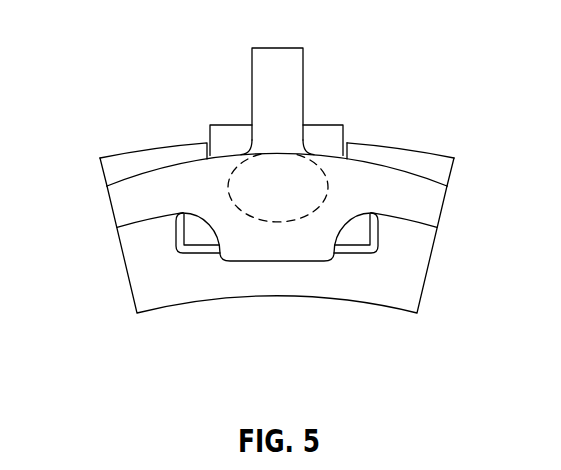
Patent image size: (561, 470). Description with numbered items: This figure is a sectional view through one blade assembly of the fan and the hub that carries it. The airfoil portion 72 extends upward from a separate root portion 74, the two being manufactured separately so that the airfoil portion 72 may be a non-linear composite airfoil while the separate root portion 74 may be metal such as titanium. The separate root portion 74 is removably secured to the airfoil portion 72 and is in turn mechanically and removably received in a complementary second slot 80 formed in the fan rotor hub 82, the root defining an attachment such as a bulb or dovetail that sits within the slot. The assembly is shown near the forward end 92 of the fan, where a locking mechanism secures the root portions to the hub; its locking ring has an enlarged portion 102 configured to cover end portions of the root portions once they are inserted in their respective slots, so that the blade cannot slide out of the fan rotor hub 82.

The airfoil portion 72 is at (290, 73).
The separate root portion 74 is at (337, 135).
The second slot 80 is at (373, 237).
The fan rotor hub 82 is at (143, 274).
The forward end 92 is at (123, 203).
The enlarged portion 102 is at (255, 243).